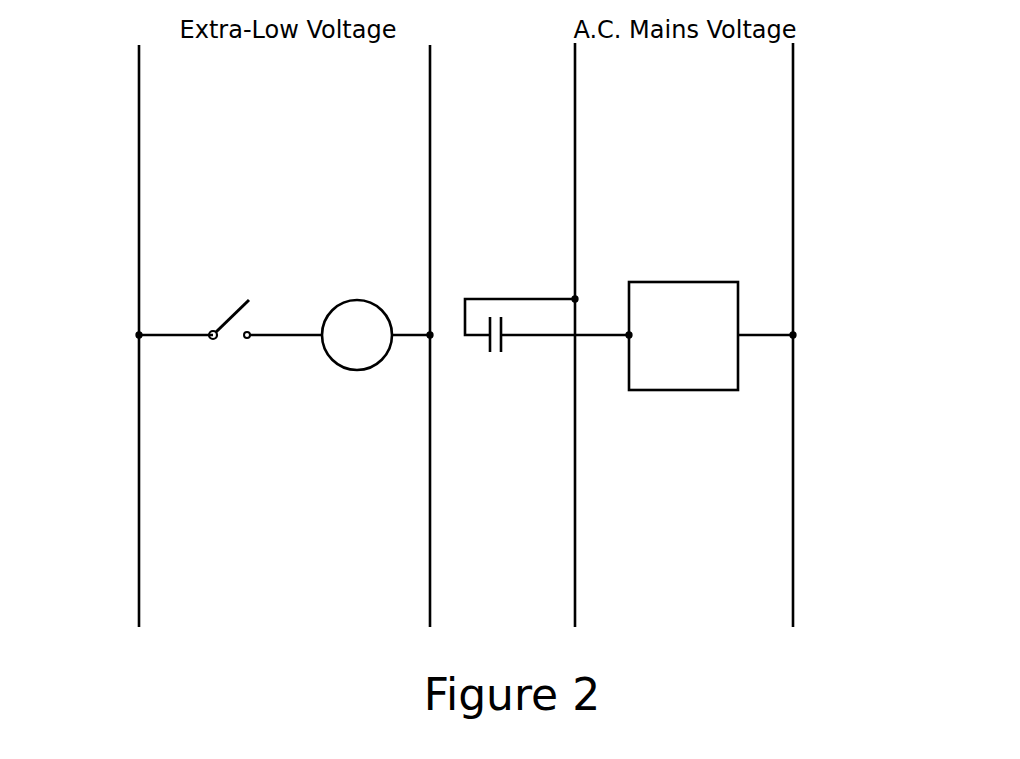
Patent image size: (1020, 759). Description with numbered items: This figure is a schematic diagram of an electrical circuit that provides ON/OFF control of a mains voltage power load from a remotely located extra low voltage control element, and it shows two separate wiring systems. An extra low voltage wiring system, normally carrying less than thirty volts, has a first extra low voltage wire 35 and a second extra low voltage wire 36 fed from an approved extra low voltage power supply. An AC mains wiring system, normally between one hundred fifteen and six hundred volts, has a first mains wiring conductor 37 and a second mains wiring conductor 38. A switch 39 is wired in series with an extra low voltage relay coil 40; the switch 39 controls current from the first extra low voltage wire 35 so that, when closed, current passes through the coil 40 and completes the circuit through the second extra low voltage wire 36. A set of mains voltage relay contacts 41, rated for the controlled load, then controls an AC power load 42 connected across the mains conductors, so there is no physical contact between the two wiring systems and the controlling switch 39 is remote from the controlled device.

The first extra low voltage wire 35 is at (133, 72).
The second extra low voltage wire 36 is at (425, 137).
The first mains wiring conductor 37 is at (578, 110).
The second mains wiring conductor 38 is at (797, 168).
The switch 39 is at (222, 303).
The extra low voltage relay coil 40 is at (353, 290).
The mains voltage relay contacts 41 is at (508, 312).
The AC power load 42 is at (715, 275).